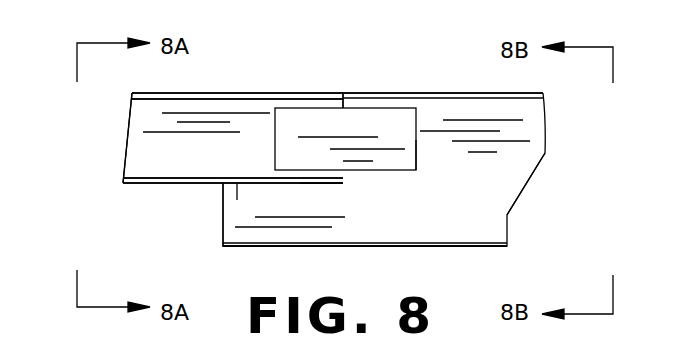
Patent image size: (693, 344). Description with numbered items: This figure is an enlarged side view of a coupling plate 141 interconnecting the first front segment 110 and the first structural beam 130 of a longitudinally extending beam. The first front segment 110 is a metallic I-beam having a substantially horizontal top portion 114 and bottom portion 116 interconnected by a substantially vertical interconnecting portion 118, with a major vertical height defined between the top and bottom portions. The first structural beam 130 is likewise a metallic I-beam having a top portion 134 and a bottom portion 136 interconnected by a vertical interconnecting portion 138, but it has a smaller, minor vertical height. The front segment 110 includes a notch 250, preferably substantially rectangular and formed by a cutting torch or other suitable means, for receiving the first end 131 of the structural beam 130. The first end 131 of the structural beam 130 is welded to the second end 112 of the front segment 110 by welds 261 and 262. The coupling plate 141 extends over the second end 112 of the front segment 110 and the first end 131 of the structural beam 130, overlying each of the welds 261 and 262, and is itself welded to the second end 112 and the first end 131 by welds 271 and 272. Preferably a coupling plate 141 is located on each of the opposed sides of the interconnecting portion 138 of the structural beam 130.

The first front segment 110 is at (527, 135).
The second end 112 is at (240, 246).
The top portion 114 is at (546, 102).
The bottom portion 116 is at (498, 243).
The interconnecting portion 118 is at (527, 173).
The first structural beam 130 is at (148, 118).
The first end 131 is at (261, 92).
The top portion 134 is at (193, 92).
The bottom portion 136 is at (162, 184).
The interconnecting portion 138 is at (150, 157).
The coupling plate 141 is at (387, 132).
The notch 250 is at (348, 96).
The weld 261 is at (344, 182).
The weld 262 is at (237, 183).
The weld 271 is at (416, 160).
The weld 272 is at (274, 138).